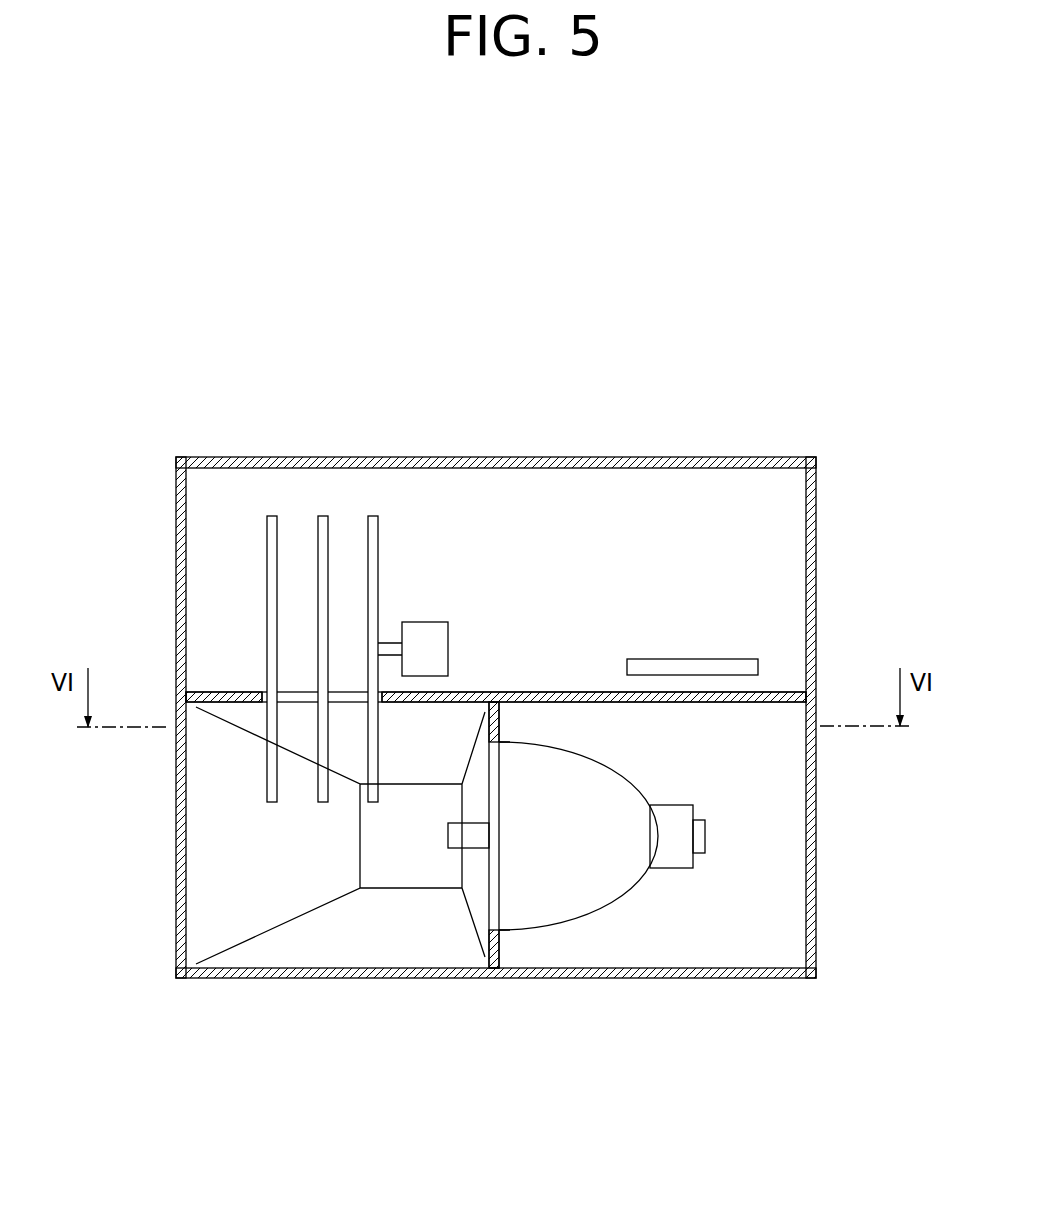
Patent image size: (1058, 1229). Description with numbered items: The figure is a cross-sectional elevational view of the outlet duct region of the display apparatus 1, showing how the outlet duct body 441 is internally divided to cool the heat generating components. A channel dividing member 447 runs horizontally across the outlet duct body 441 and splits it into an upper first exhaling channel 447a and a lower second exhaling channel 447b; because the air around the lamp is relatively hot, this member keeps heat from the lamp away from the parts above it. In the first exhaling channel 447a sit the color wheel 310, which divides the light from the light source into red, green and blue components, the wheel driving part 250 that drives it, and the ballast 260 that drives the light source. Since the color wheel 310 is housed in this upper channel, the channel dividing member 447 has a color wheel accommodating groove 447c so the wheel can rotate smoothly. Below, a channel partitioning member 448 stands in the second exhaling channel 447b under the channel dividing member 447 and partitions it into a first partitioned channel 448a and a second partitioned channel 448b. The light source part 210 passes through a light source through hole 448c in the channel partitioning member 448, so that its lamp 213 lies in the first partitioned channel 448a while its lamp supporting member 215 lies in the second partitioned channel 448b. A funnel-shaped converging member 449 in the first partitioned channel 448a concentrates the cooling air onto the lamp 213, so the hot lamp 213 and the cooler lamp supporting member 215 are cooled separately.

The display apparatus 1 is at (834, 331).
The light source part 210 is at (652, 886).
The lamp 213 is at (460, 845).
The lamp supporting member 215 is at (705, 835).
The wheel driving part 250 is at (420, 622).
The ballast 260 is at (707, 659).
The color wheel 310 is at (322, 516).
The outlet duct body 441 is at (176, 835).
The channel dividing member 447 is at (775, 695).
The first exhaling channel 447a is at (543, 568).
The second exhaling channel 447b is at (678, 1123).
The color wheel accommodating groove 447c is at (270, 692).
The channel partitioning member 448 is at (497, 948).
The first partitioned channel 448a is at (400, 852).
The second partitioned channel 448b is at (600, 955).
The light source through hole 448c is at (497, 925).
The converging member 449 is at (392, 888).